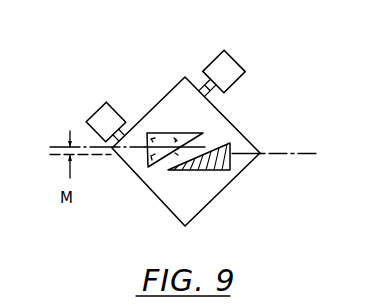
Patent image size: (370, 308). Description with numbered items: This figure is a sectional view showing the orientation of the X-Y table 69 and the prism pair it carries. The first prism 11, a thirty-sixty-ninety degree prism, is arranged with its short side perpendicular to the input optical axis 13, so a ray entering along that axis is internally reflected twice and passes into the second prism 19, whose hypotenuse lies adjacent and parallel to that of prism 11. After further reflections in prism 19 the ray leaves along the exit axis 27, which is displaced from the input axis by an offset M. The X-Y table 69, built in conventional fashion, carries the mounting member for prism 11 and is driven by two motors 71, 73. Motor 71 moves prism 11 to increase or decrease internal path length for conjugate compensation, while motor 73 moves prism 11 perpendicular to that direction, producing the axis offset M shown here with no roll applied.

The first 30°-60°-90° prism 11 is at (162, 133).
The input optical axis 13 is at (58, 147).
The second 30°-60°-90° prism 19 is at (230, 143).
The exit axis 27 is at (320, 154).
The X-Y table 69 is at (236, 177).
The motor 71 is at (101, 105).
The motor 73 is at (238, 63).